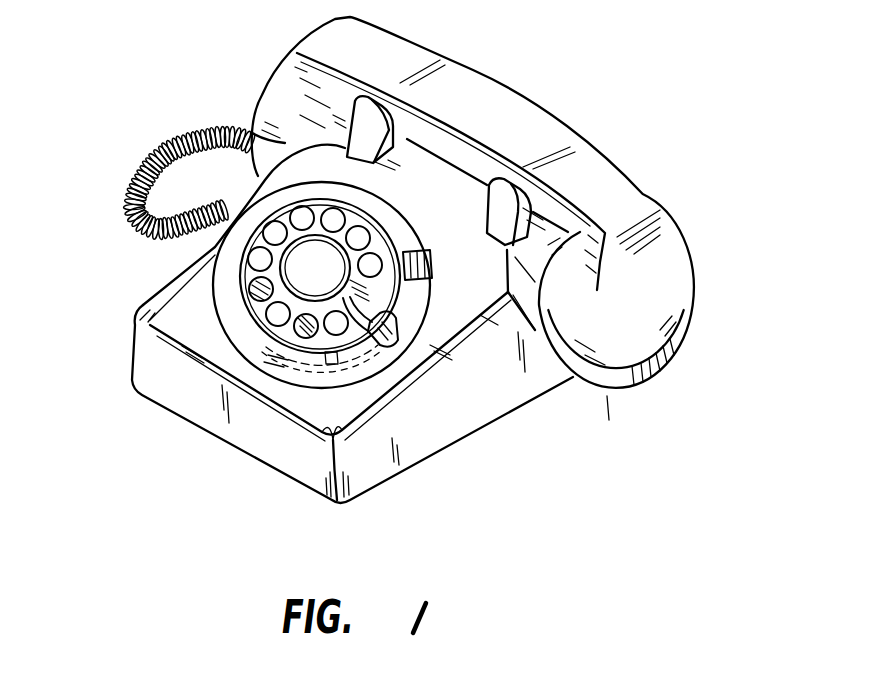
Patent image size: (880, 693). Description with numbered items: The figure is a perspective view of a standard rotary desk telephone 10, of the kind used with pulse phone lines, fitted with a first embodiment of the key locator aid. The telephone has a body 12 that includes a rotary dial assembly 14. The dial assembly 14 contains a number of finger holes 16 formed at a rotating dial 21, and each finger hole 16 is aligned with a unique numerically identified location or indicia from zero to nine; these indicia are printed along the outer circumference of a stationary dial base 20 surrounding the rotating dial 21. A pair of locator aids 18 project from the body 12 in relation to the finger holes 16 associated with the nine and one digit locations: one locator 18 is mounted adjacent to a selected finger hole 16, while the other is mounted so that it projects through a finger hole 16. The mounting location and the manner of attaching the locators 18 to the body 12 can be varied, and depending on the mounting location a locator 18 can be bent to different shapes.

The rotary desk telephone 10 is at (700, 97).
The body 12 is at (452, 422).
The rotary dial assembly 14 is at (261, 299).
The finger holes 16 is at (352, 242).
The locator aids 18 is at (431, 256).
The stationary dial base 20 is at (227, 328).
The rotating dial 21 is at (240, 280).